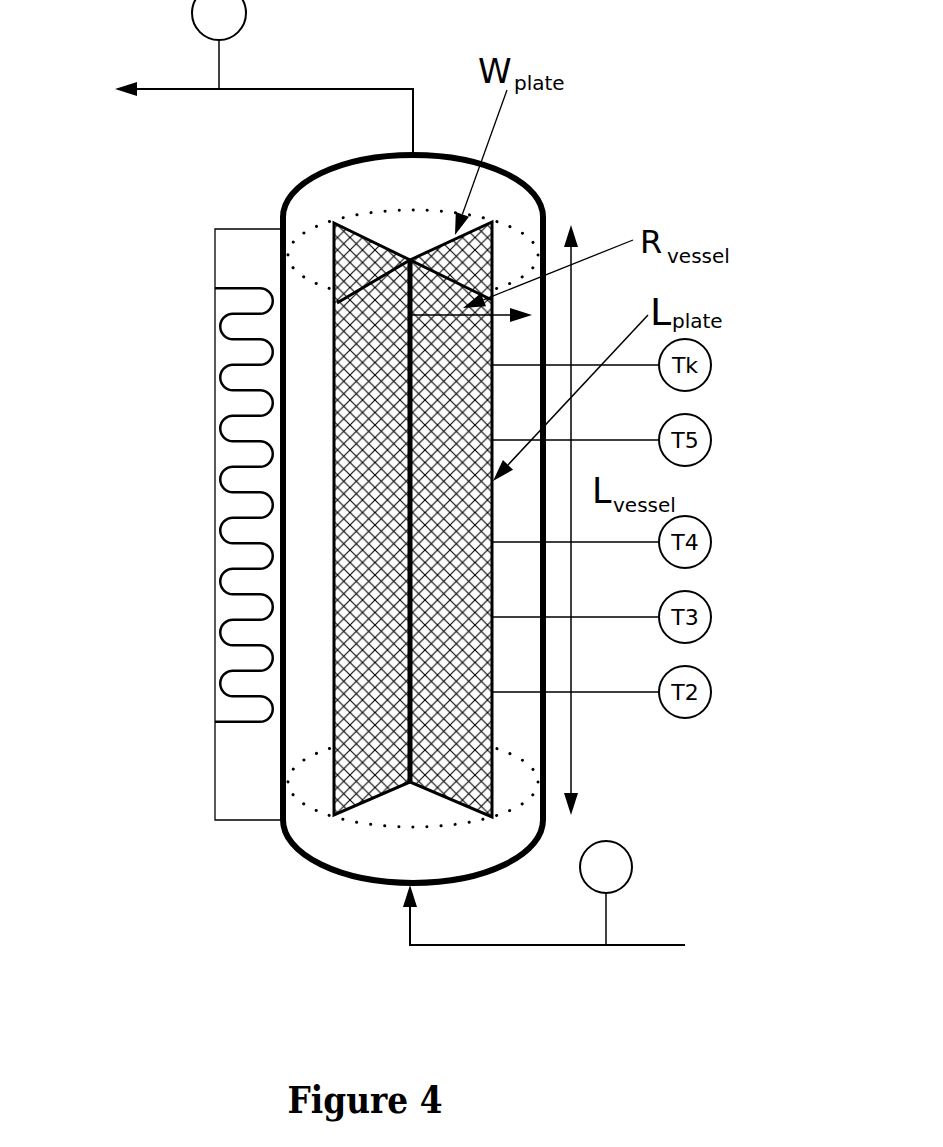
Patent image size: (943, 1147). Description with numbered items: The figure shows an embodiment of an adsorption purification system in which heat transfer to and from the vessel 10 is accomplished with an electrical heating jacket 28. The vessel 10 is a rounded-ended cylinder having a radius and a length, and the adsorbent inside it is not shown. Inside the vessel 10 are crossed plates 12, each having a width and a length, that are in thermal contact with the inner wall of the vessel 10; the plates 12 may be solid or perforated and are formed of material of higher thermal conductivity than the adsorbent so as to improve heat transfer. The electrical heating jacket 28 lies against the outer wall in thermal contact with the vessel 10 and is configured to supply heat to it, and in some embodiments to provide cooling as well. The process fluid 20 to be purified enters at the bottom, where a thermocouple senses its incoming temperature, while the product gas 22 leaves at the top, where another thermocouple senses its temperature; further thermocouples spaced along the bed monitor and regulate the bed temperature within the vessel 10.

The vessel 10 is at (273, 182).
The plate 12 is at (363, 824).
The process fluid 20 is at (625, 918).
The product gas 22 is at (231, 77).
The electrical heating jacket 28 is at (156, 524).